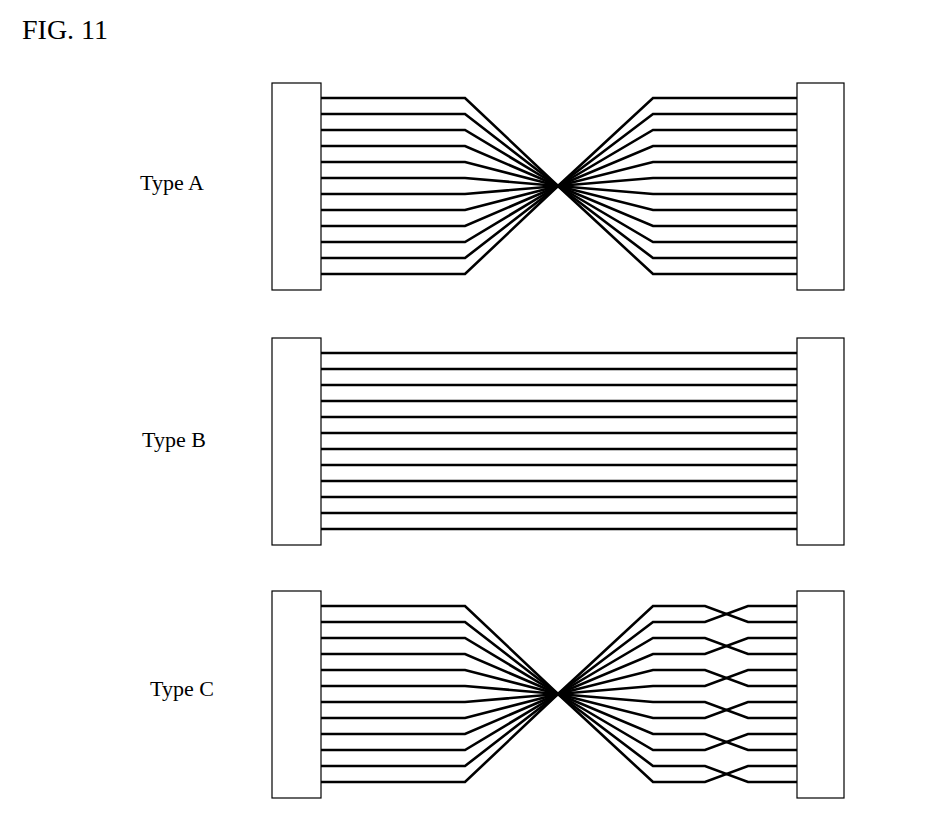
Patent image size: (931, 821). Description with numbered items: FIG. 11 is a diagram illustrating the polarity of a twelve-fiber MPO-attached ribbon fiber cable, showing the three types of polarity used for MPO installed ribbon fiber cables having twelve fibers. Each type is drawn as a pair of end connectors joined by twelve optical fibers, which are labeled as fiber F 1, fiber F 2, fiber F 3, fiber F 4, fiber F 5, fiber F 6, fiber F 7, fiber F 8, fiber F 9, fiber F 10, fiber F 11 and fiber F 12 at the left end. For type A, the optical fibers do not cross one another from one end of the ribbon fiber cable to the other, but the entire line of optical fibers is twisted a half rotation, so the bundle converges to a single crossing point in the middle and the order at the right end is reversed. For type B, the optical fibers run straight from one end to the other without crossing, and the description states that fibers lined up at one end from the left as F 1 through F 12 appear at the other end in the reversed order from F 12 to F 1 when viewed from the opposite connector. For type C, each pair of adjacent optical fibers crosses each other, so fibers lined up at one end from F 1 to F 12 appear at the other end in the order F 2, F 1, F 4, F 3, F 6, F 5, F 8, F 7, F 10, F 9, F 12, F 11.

The fiber F1 1 is at (555, 437).
The fiber F2 2 is at (555, 448).
The fiber F3 3 is at (555, 437).
The fiber F4 4 is at (555, 448).
The fiber F5 5 is at (555, 437).
The fiber F6 6 is at (555, 448).
The fiber F7 7 is at (555, 440).
The fiber F8 8 is at (555, 440).
The fiber F9 9 is at (555, 440).
The fiber F10 10 is at (558, 440).
The fiber F11 11 is at (558, 440).
The fiber F12 12 is at (558, 440).